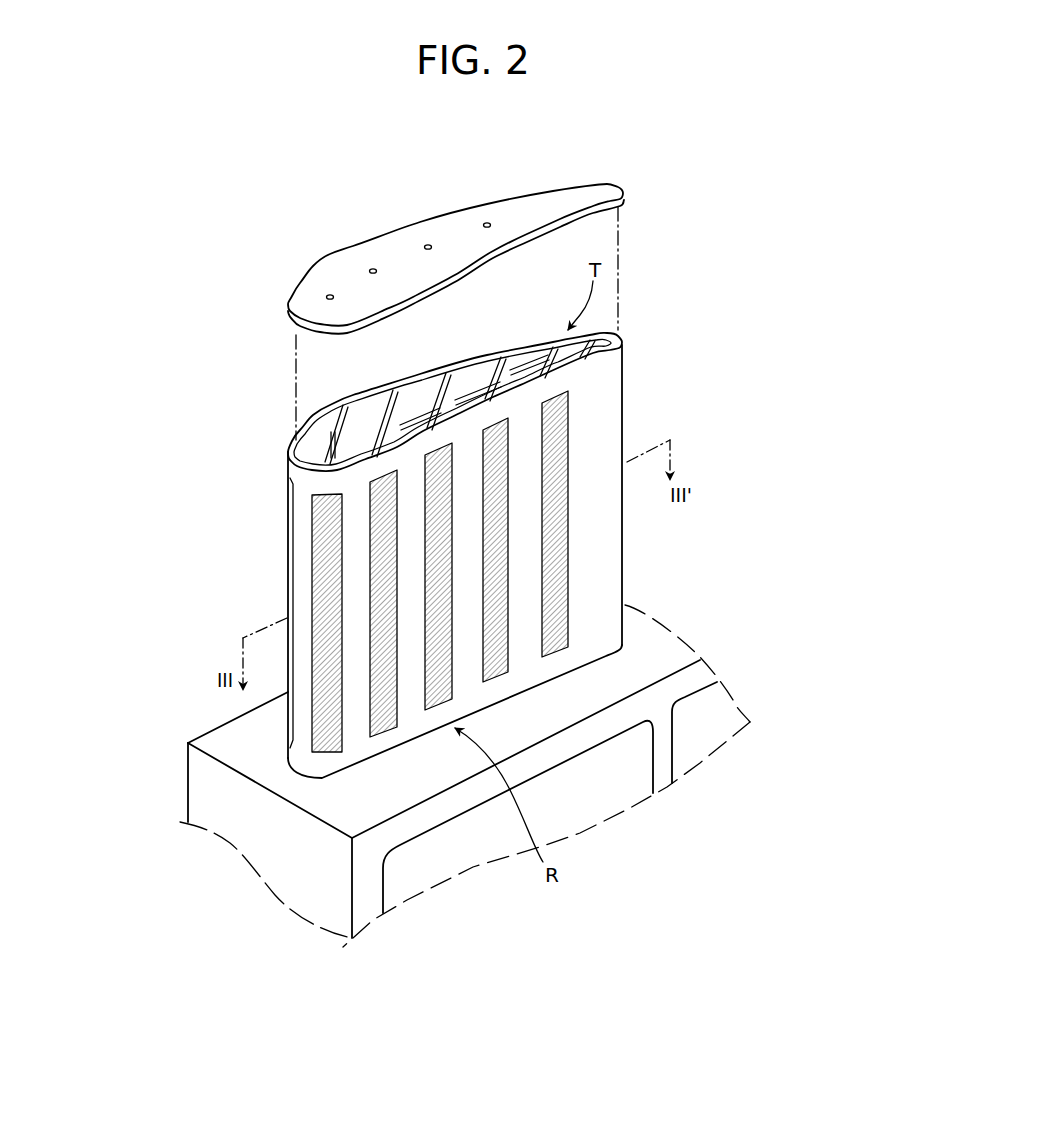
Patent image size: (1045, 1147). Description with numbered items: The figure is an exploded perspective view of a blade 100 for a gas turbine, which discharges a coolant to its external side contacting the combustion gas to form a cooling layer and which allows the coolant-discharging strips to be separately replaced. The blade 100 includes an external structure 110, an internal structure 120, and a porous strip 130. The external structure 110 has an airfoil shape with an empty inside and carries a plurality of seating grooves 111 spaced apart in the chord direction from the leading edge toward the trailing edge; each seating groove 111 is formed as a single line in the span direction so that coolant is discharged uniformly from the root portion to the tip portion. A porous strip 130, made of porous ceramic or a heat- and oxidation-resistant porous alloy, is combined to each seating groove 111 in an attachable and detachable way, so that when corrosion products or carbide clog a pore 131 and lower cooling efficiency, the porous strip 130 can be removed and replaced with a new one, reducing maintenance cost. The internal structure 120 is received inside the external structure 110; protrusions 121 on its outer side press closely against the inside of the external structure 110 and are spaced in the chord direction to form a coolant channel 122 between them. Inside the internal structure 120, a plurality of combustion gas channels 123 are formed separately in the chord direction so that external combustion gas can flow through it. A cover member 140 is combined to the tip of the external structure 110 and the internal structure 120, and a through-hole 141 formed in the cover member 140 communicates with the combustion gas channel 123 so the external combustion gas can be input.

The blade 100 is at (470, 549).
The external structure 110 is at (298, 466).
The seating groove 111 is at (287, 762).
The internal structure 120 is at (425, 393).
The protrusion 121 is at (307, 443).
The coolant channel 122 is at (457, 365).
The combustion gas channel 123 is at (368, 421).
The porous strip 130 is at (393, 571).
The pore 131 is at (320, 576).
The cover member 140 is at (441, 259).
The through-hole 141 is at (372, 268).